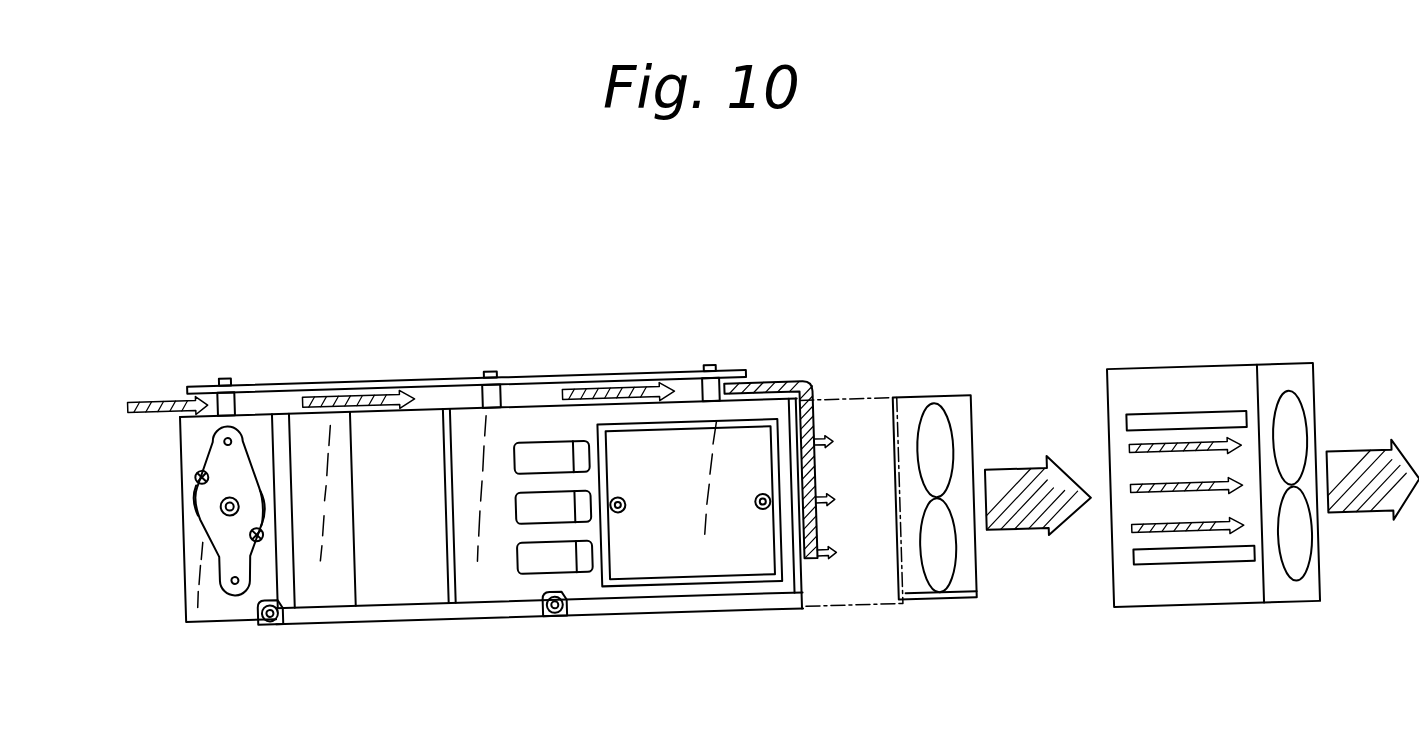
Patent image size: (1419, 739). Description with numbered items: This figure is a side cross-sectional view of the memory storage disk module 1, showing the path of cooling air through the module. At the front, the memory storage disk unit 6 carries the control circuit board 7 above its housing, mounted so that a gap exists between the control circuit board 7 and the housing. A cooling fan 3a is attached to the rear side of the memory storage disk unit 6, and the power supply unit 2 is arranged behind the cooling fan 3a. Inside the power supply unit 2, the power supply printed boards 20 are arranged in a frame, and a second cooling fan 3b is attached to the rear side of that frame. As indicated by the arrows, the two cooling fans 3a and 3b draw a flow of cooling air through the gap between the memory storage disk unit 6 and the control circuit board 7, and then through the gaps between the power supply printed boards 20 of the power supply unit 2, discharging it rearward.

The memory storage disk module 1 is at (843, 270).
The power supply unit 2 is at (1138, 598).
The cooling fan 3a is at (956, 398).
The cooling fan 3b is at (1293, 392).
The memory storage disk unit 6 is at (482, 587).
The control circuit board 7 is at (553, 378).
The power supply printed boards 20 is at (1183, 415).